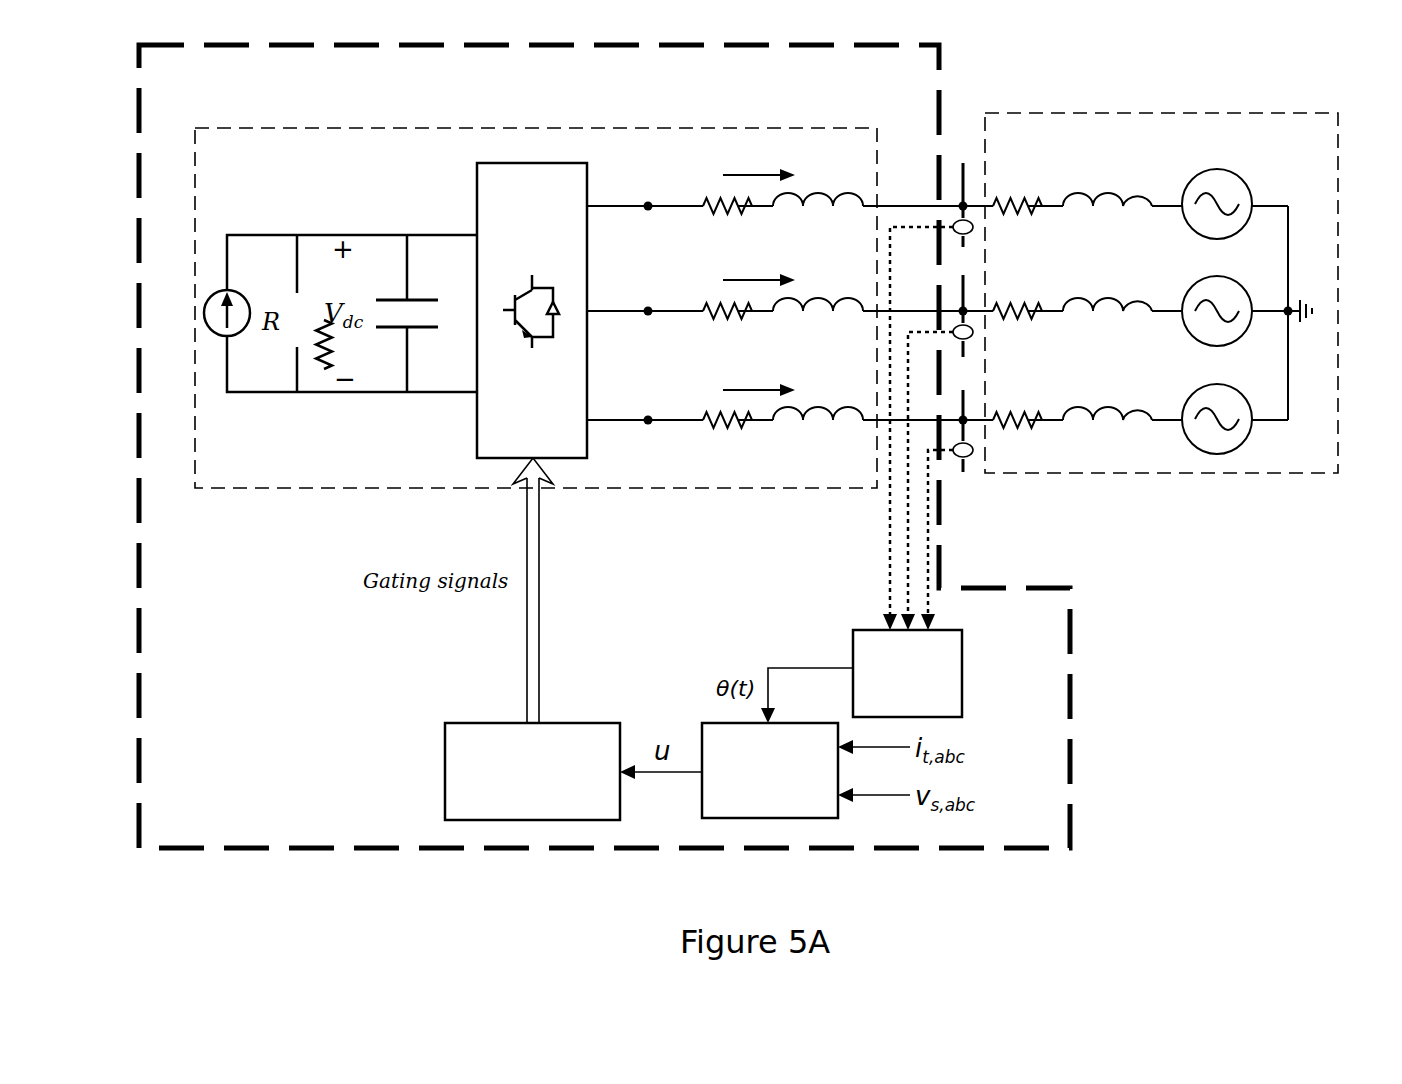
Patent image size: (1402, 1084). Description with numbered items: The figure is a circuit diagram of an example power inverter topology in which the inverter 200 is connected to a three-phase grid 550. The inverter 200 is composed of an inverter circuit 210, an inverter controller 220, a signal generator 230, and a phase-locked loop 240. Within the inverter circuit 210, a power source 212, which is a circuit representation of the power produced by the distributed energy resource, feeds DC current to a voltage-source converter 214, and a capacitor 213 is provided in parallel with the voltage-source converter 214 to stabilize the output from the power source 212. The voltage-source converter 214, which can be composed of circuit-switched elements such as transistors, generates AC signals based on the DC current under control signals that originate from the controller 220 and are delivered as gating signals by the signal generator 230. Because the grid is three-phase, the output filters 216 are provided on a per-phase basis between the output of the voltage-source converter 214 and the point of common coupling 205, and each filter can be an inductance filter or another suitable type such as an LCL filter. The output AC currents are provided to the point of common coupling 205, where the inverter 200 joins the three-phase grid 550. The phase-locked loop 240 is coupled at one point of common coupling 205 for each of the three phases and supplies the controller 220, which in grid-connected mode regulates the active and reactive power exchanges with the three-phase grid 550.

The inverter 200 is at (139, 277).
The point of common coupling 205 is at (965, 484).
The inverter circuit 210 is at (246, 128).
The power source 212 is at (210, 338).
The capacitor 213 is at (428, 298).
The voltage-source converter 214 is at (550, 163).
The output filter 216 is at (757, 456).
The inverter controller 220 is at (770, 770).
The signal generator 230 is at (532, 771).
The phase-locked loop 240 is at (907, 673).
The three-phase grid 550 is at (1295, 113).